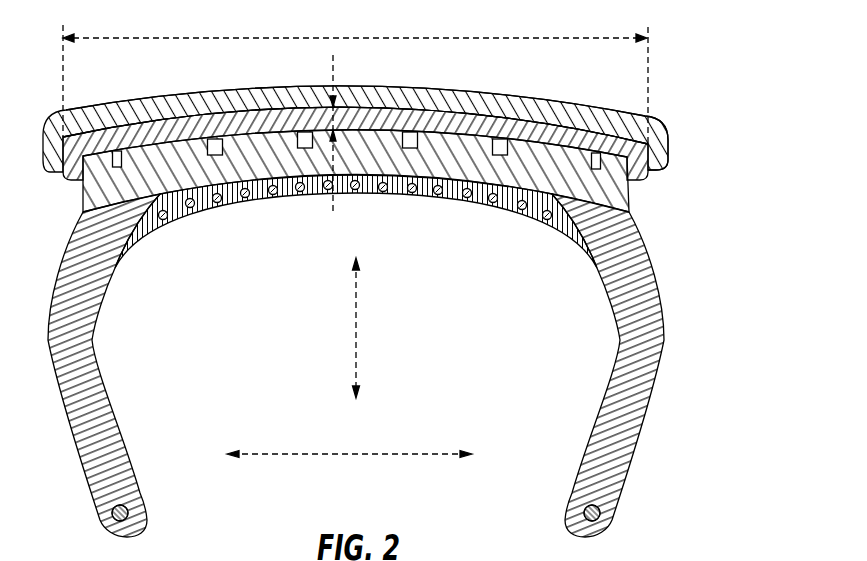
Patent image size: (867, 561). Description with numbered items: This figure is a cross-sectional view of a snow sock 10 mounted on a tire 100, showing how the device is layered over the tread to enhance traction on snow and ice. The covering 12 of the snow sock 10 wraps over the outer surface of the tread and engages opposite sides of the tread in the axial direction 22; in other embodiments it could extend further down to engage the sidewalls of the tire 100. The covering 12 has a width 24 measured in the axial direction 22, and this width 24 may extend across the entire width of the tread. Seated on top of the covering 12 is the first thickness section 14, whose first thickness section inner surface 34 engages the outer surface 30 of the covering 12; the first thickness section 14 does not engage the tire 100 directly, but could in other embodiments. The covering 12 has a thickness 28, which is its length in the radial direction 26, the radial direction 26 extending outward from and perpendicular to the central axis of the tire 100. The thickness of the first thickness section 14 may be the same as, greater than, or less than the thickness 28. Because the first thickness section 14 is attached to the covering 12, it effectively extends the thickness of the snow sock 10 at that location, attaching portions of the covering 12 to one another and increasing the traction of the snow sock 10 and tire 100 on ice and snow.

The snow sock 10 is at (668, 137).
The covering 12 is at (647, 160).
The first thickness section 14 is at (140, 110).
The outer surface of the covering 30 is at (528, 110).
The first thickness section inner surface 34 is at (213, 134).
The tire 100 is at (662, 333).
The axial direction 22 is at (425, 452).
The width 24 is at (508, 39).
The radial direction 26 is at (357, 320).
The thickness 28 is at (334, 72).